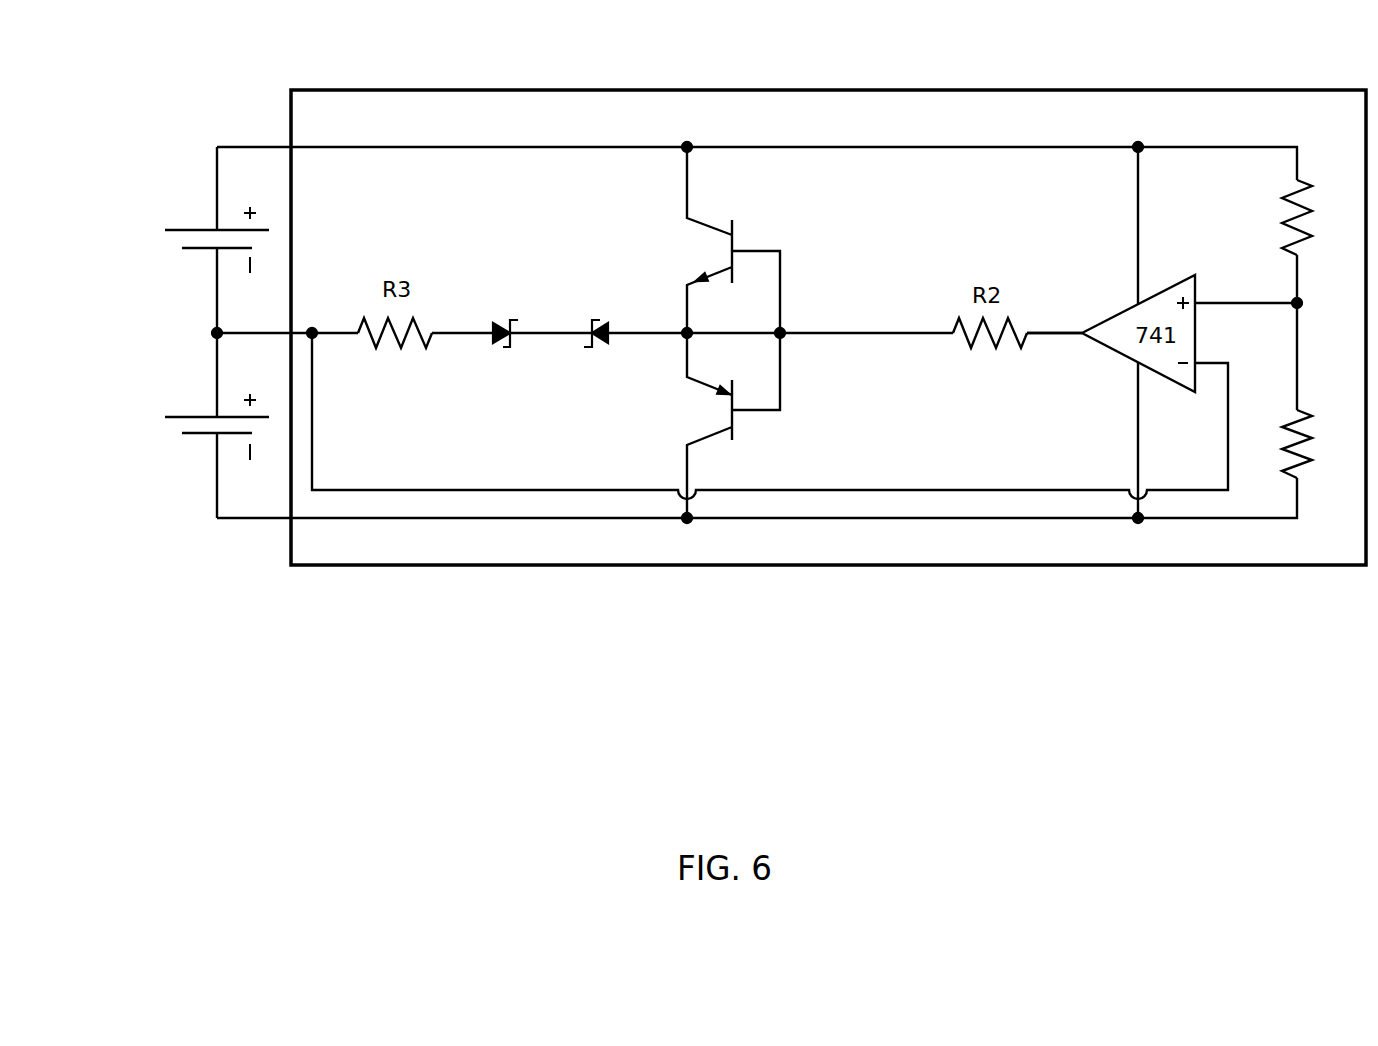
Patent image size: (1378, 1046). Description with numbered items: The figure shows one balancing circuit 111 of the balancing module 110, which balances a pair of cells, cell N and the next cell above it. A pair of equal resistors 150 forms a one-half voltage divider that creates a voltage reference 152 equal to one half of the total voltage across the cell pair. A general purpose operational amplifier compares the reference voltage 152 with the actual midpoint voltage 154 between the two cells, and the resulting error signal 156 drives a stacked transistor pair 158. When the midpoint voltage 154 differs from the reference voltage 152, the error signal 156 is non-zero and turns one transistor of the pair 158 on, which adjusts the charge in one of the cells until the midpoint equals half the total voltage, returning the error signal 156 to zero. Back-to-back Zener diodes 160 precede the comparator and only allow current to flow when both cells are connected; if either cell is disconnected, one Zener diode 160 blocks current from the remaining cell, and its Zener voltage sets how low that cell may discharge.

The balancing module 110 is at (965, 88).
The balancing circuit 111 is at (282, 678).
The equal resistors 150 is at (1283, 222).
The voltage reference 152 is at (1305, 298).
The midpoint voltage 154 is at (213, 330).
The error signal 156 is at (1047, 332).
The stacked transistor pair 158 is at (805, 242).
The Zener diodes 160 is at (498, 323).